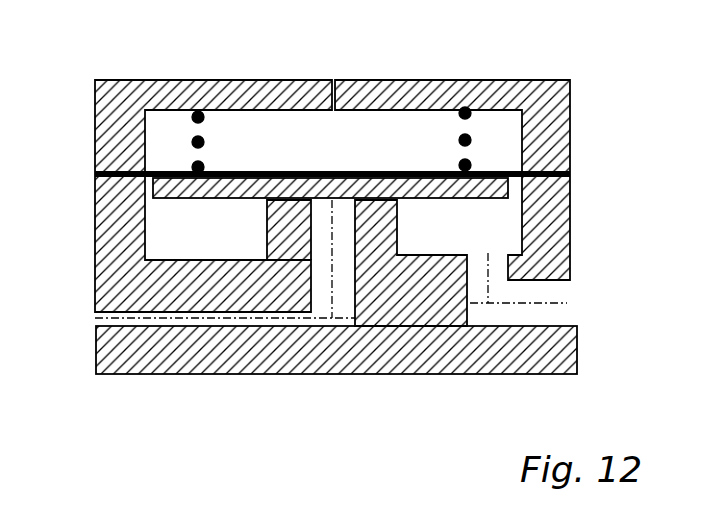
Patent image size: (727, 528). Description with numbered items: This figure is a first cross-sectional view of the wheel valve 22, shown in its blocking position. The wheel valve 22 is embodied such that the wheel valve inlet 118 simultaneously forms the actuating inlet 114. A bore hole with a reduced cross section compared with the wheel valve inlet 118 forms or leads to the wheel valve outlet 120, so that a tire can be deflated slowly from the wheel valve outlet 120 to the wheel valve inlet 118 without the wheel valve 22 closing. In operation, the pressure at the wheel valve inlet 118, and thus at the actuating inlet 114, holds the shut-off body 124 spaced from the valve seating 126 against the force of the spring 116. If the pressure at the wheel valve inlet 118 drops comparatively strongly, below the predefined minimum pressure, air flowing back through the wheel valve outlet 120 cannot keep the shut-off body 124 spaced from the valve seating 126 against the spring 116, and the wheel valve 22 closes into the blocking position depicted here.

The wheel valve 22 is at (552, 66).
The actuating inlet 114 is at (478, 223).
The spring 116 is at (458, 121).
The wheel valve inlet 118 is at (576, 297).
The wheel valve outlet 120 is at (81, 295).
The shut-off body 124 is at (485, 191).
The valve seating 126 is at (272, 221).